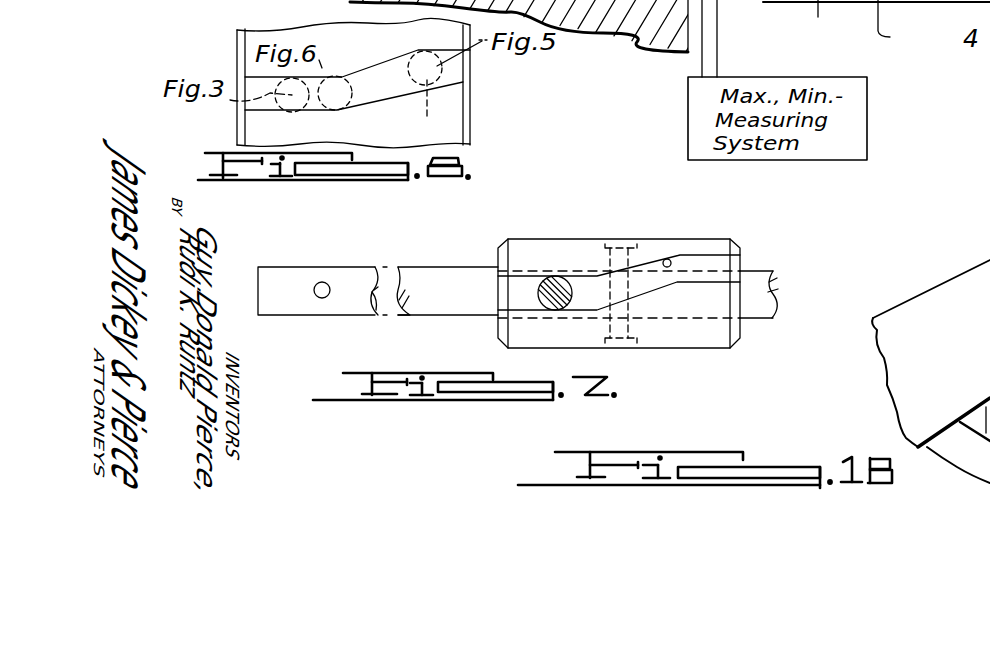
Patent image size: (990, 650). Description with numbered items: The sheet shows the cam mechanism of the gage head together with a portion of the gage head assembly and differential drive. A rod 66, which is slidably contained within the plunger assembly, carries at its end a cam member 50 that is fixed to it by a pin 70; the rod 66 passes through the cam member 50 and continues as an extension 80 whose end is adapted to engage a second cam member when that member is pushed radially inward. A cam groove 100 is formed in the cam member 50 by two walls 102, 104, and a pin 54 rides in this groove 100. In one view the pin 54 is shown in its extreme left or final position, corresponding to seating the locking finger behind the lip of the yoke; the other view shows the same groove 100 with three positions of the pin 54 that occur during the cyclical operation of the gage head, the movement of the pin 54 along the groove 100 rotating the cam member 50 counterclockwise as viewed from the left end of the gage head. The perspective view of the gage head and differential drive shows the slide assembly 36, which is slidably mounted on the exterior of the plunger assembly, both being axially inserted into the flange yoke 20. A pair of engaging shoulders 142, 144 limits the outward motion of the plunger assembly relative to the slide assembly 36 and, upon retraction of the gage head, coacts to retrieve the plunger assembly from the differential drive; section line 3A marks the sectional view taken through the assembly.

In FIG. 8, the pin 54 is at (431, 96).
In FIG. 7, the pin 54 is at (555, 282).
In FIG. 8, the wall 104 is at (370, 72).
In FIG. 7, the wall 104 is at (663, 262).
In FIG. 8, the wall 102 is at (373, 95).
In FIG. 7, the wall 102 is at (657, 282).
In FIG. 8, the cam groove 100 is at (463, 70).
In FIG. 7, the cam groove 100 is at (733, 268).
In FIG. 8, the cam member 50 is at (463, 105).
In FIG. 7, the rod 66 is at (345, 276).
In FIG. 7, the extension 80 is at (773, 303).
In FIG. 7, the pin 70 is at (633, 332).
In FIG. 1B, the yoke 20 is at (646, 26).
In FIG. 1B, the slide assembly 36 is at (805, 3).
In FIG. 1B, the engaging shoulder 142 is at (819, 26).
In FIG. 1B, the engaging shoulder 144 is at (876, 26).
In FIG. 1B, the section line 3A is at (942, 297).